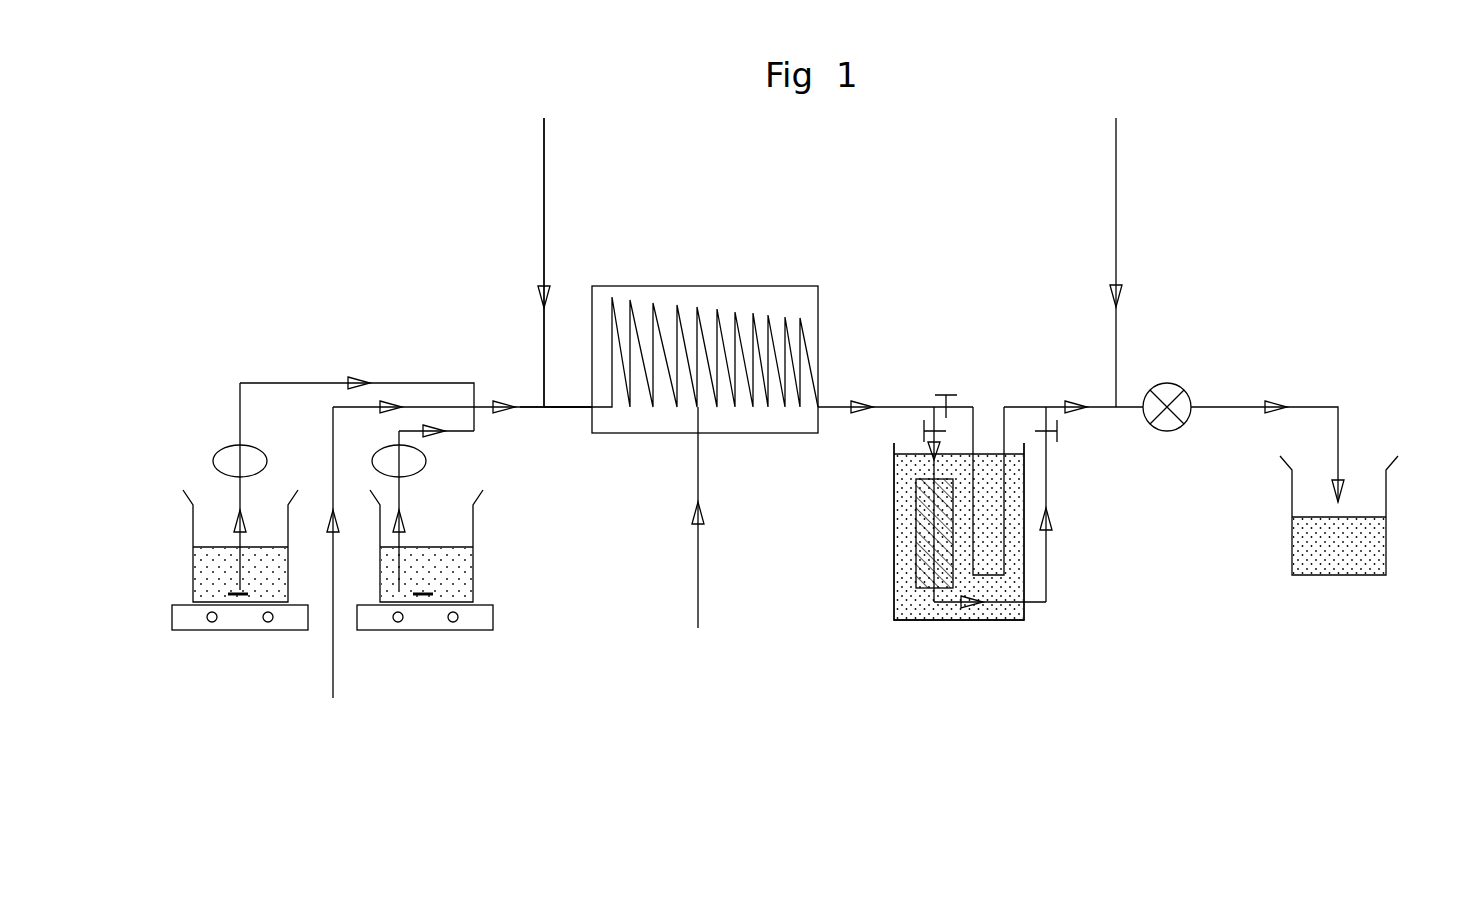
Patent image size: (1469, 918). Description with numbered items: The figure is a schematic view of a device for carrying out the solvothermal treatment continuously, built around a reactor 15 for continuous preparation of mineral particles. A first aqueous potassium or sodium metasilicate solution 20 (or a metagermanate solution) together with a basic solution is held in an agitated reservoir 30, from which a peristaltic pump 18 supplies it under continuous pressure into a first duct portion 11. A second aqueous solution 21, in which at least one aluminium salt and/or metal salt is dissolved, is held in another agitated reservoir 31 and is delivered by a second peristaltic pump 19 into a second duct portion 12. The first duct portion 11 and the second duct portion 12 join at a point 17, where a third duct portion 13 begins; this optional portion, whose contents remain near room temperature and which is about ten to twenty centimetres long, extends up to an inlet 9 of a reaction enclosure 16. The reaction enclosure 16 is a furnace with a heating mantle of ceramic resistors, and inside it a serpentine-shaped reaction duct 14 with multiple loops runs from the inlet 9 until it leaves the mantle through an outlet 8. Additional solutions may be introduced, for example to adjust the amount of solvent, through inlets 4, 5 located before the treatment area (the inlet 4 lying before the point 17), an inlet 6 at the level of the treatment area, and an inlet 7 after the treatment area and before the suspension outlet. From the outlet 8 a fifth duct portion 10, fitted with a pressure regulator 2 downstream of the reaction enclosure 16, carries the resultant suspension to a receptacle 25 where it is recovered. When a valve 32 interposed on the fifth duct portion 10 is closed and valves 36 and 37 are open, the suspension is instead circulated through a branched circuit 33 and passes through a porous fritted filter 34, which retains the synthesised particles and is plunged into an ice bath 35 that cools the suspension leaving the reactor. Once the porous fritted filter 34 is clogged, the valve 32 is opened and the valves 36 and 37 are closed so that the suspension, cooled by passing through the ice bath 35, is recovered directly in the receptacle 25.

The pressure regulator 2 is at (1167, 383).
The inlet 4 is at (318, 680).
The inlet 5 is at (528, 178).
The inlet 6 is at (683, 612).
The inlet 7 is at (1132, 178).
The outlet 8 is at (822, 405).
The inlet 9 is at (588, 404).
The fifth duct portion 10 is at (902, 387).
The first duct portion 11 is at (293, 370).
The second duct portion 12 is at (470, 437).
The third duct portion 13 is at (533, 415).
The reaction duct 14 is at (636, 297).
The reactor 15 is at (625, 212).
The reaction enclosure 16 is at (800, 298).
The point 17 is at (476, 407).
The peristaltic pump 18 is at (213, 461).
The second peristaltic pump 19 is at (426, 461).
The first aqueous solution 20 is at (200, 580).
The second aqueous solution 21 is at (462, 580).
The receptacle 25 is at (1362, 545).
The reservoir 30 is at (193, 520).
The reservoir 31 is at (473, 527).
The valve 32 is at (953, 395).
The branched circuit 33 is at (1034, 606).
The porous fritted filter 34 is at (920, 548).
The ice bath 35 is at (906, 607).
The valve 36 is at (923, 428).
The valve 37 is at (1060, 433).